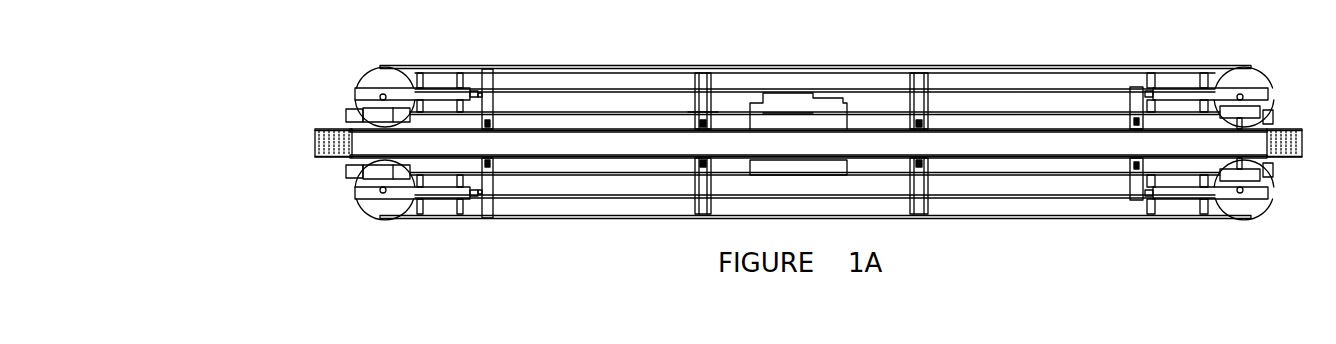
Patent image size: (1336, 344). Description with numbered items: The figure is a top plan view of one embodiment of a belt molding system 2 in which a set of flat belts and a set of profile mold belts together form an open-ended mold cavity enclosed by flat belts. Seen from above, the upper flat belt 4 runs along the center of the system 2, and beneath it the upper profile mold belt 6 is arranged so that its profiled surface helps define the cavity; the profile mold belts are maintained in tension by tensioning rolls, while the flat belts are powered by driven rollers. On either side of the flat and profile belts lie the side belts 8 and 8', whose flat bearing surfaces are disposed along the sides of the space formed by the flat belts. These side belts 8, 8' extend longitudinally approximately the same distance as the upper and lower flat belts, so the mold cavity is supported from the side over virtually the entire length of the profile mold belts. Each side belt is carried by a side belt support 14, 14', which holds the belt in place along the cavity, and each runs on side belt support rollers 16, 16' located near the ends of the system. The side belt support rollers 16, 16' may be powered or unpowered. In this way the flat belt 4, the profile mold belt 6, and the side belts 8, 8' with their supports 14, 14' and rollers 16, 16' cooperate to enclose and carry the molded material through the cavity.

The system 2 is at (760, 188).
The upper flat belt 4 is at (352, 182).
The upper profile mold belt 6 is at (343, 129).
The side belt 8 is at (815, 47).
The side belt 8' is at (815, 243).
The side belt support 14 is at (460, 75).
The side belt support 14' is at (456, 206).
The side belt support roller 16 is at (418, 74).
The side belt support roller 16' is at (405, 207).